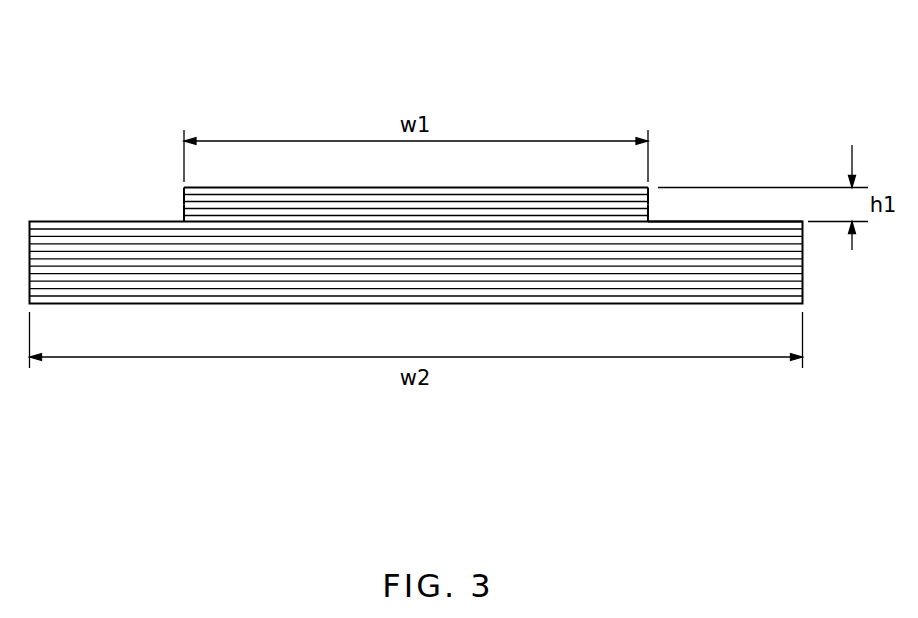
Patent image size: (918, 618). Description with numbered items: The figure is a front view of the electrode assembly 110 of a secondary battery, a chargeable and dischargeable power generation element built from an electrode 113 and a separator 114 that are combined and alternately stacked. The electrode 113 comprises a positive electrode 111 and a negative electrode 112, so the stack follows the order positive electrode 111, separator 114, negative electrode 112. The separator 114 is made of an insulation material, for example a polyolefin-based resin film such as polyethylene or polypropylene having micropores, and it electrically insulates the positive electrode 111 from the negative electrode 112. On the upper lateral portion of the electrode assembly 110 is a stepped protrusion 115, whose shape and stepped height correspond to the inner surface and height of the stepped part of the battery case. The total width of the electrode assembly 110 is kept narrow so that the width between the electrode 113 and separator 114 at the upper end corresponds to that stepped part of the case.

The electrode assembly 110 is at (409, 158).
The positive electrode 111 is at (183, 201).
The negative electrode 112 is at (183, 213).
The electrode 113 is at (331, 151).
The separator 114 is at (183, 194).
The stepped protrusion 115 is at (695, 207).